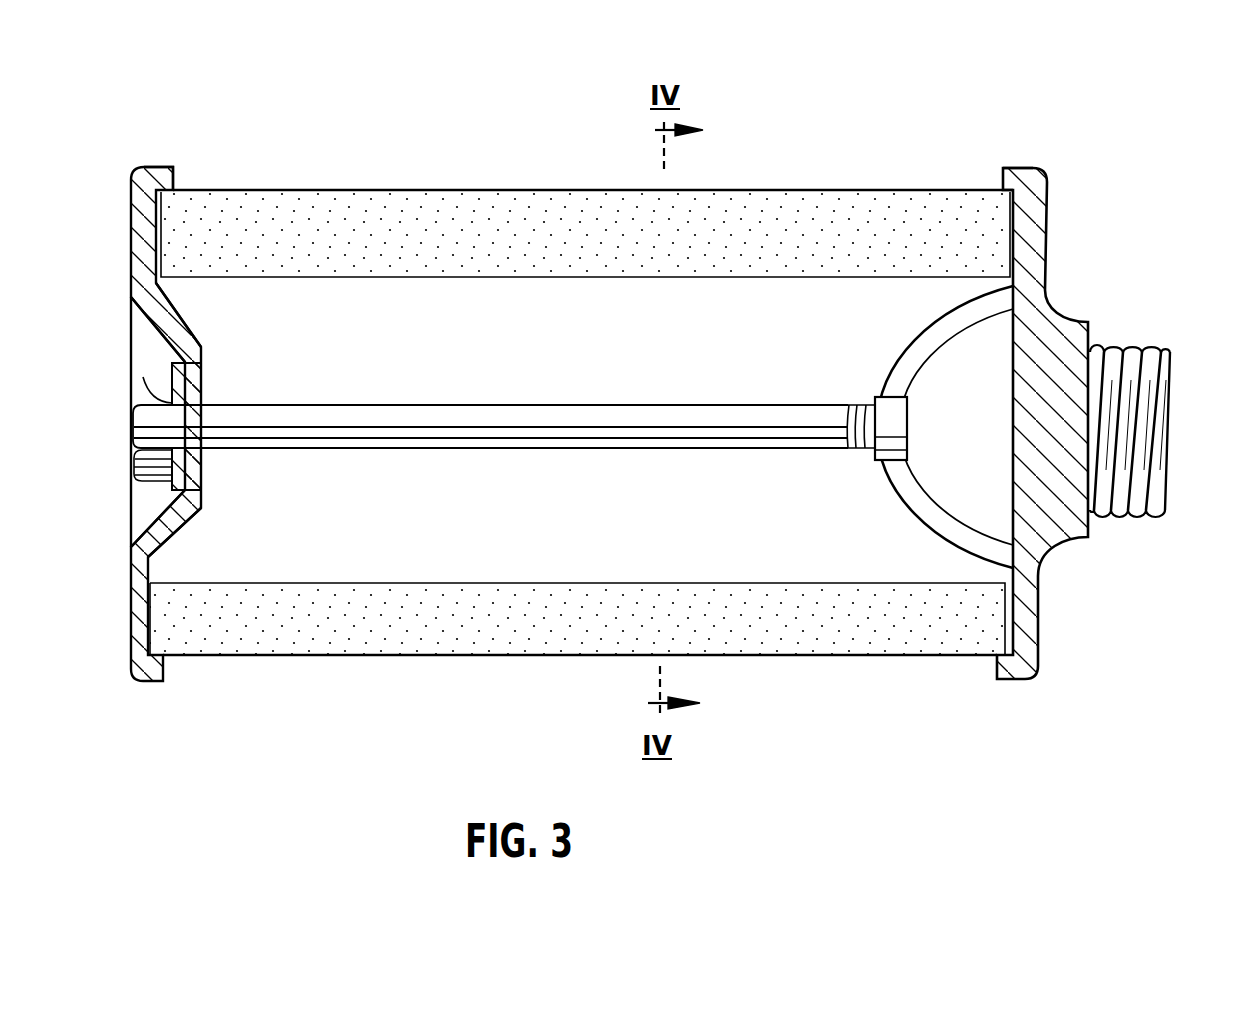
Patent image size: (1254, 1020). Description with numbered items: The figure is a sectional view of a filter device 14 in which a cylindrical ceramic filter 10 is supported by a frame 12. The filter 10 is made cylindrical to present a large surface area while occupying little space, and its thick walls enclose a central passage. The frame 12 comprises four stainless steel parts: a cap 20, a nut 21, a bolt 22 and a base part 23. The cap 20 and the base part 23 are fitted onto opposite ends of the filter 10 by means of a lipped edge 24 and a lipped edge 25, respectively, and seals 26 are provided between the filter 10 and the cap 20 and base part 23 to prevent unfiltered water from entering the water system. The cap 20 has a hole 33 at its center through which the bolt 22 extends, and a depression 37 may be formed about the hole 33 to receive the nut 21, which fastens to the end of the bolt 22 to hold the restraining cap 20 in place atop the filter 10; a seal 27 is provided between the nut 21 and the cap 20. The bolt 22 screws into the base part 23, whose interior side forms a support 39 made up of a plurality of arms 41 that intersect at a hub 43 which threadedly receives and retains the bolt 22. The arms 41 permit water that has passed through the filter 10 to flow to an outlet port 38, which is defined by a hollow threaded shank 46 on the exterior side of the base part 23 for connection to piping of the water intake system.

The ceramic filter 10 is at (750, 192).
The frame 12 is at (1152, 264).
The filter device 14 is at (541, 130).
The cap 20 is at (146, 401).
The nut 21 is at (133, 440).
The bolt 22 is at (590, 416).
The base part 23 is at (1061, 400).
The lipped edge 24 is at (172, 166).
The lipped edge 25 is at (1012, 167).
The seals 26 is at (150, 246).
The seal 27 is at (175, 489).
The hole 33 is at (172, 377).
The depression 37 is at (143, 330).
The outlet port 38 is at (1173, 400).
The support 39 is at (896, 345).
The arms 41 is at (953, 528).
The hub 43 is at (880, 448).
The threaded shank 46 is at (1136, 362).